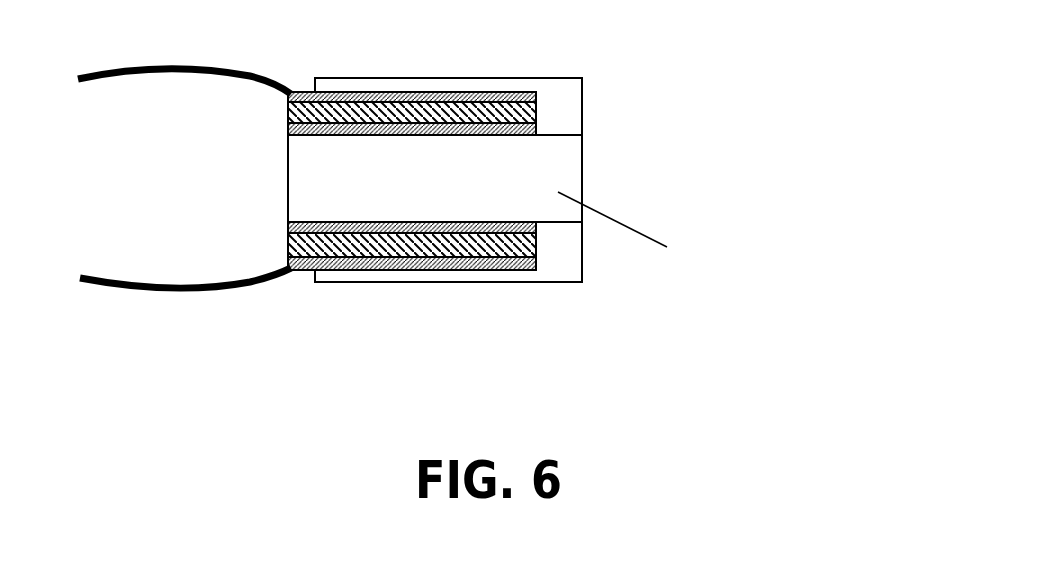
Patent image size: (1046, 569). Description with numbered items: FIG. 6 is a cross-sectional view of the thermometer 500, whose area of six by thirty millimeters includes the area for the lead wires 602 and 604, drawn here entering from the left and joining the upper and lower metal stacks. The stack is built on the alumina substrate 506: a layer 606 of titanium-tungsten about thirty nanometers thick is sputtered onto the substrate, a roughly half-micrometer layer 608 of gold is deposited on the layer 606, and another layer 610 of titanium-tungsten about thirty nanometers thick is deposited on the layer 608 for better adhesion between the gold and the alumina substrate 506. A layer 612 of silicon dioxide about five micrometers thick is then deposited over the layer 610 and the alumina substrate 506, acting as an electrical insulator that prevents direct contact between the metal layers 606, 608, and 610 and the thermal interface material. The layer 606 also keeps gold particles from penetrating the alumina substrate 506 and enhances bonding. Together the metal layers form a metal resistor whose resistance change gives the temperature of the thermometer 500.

The thermometer 500 is at (472, 213).
The alumina substrate 506 is at (458, 188).
The lead wire 602 is at (97, 72).
The lead wire 604 is at (83, 283).
The layer of titanium-tungsten 606 is at (537, 133).
The layer of Au 608 is at (537, 118).
The layer of TiW 610 is at (537, 98).
The layer of silicon dioxide 612 is at (553, 88).